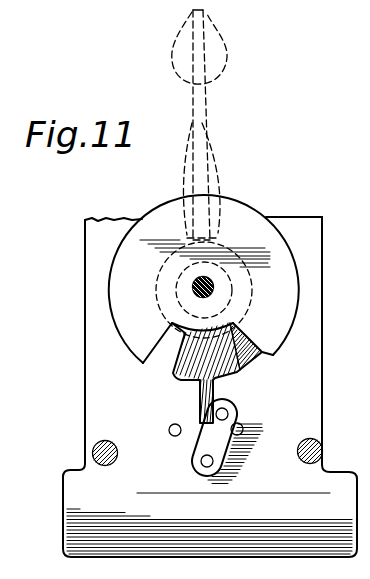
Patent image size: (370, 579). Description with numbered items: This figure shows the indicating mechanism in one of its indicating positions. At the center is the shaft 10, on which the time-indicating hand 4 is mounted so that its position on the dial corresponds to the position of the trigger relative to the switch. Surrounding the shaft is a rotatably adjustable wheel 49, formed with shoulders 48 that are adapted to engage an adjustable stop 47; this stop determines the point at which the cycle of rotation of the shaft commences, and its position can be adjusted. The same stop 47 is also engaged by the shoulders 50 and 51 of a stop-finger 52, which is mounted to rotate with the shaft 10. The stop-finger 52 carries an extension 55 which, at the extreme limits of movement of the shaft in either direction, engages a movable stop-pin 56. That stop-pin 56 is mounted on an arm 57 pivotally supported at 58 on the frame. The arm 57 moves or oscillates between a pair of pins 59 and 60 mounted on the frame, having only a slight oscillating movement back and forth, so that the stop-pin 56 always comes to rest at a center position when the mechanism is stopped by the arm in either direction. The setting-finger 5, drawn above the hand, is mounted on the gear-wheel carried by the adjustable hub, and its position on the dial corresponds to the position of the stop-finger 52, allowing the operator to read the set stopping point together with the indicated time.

The time-indicating hand 4 is at (205, 113).
The setting-finger 5 is at (217, 162).
The shaft 10 is at (214, 286).
The adjustable stop 47 is at (268, 352).
The shoulders 48 is at (145, 362).
The wheel 49 is at (204, 279).
The shoulder 50 is at (246, 368).
The shoulder 51 is at (179, 355).
The stop-finger 52 is at (221, 380).
The extension 55 is at (206, 403).
The movable stop-pin 56 is at (229, 412).
The arm 57 is at (207, 444).
The pivot 58 is at (201, 462).
The pin 59 is at (169, 430).
The pin 60 is at (243, 429).